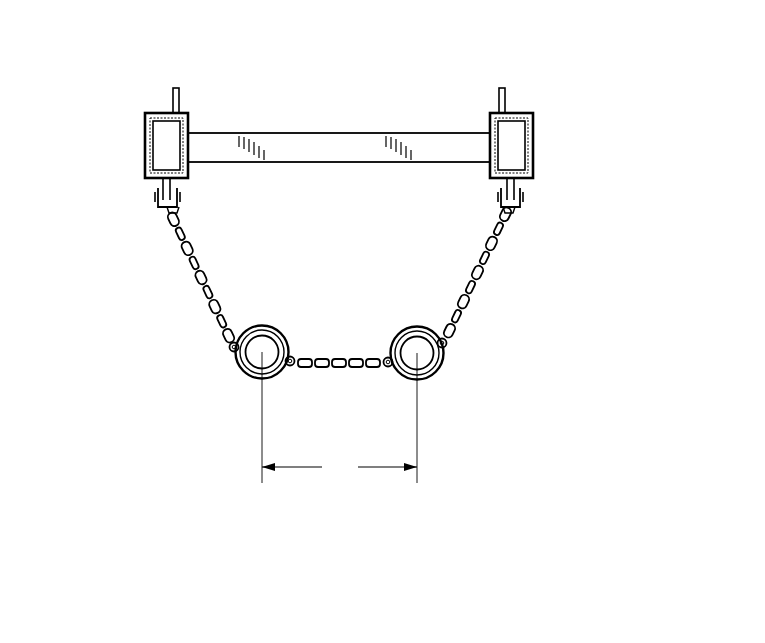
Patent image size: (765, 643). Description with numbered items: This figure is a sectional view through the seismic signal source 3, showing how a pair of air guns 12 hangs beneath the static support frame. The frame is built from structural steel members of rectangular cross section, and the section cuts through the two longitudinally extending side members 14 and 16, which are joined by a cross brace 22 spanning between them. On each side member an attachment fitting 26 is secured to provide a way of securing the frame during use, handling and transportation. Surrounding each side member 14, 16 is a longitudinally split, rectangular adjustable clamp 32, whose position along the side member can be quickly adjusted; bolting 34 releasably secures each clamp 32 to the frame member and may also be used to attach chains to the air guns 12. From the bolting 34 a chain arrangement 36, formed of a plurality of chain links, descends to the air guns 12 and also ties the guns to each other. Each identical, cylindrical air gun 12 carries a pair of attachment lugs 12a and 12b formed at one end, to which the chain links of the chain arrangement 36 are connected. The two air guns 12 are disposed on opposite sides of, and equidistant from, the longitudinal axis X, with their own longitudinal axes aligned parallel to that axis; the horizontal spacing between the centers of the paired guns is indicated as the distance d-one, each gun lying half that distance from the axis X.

The seismic signal source 3 is at (422, 57).
The air gun 12 is at (248, 376).
The attachment lug 12a is at (230, 348).
The attachment lug 12b is at (292, 371).
The side member 14 is at (532, 145).
The side member 16 is at (145, 143).
The cross brace 22 is at (303, 133).
The attachment fitting 26 is at (172, 97).
The adjustable clamp 32 is at (532, 130).
The bolting 34 is at (522, 205).
The chain arrangement 36 is at (192, 266).
The longitudinal axis X is at (362, 357).